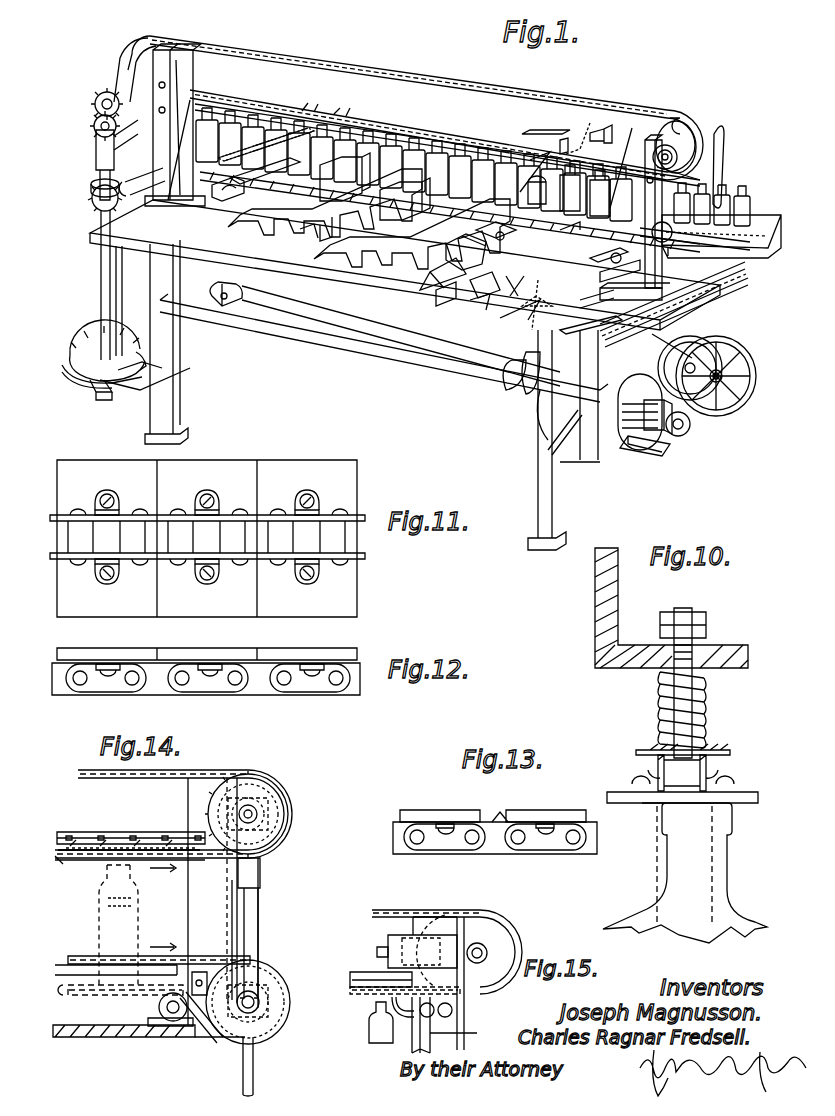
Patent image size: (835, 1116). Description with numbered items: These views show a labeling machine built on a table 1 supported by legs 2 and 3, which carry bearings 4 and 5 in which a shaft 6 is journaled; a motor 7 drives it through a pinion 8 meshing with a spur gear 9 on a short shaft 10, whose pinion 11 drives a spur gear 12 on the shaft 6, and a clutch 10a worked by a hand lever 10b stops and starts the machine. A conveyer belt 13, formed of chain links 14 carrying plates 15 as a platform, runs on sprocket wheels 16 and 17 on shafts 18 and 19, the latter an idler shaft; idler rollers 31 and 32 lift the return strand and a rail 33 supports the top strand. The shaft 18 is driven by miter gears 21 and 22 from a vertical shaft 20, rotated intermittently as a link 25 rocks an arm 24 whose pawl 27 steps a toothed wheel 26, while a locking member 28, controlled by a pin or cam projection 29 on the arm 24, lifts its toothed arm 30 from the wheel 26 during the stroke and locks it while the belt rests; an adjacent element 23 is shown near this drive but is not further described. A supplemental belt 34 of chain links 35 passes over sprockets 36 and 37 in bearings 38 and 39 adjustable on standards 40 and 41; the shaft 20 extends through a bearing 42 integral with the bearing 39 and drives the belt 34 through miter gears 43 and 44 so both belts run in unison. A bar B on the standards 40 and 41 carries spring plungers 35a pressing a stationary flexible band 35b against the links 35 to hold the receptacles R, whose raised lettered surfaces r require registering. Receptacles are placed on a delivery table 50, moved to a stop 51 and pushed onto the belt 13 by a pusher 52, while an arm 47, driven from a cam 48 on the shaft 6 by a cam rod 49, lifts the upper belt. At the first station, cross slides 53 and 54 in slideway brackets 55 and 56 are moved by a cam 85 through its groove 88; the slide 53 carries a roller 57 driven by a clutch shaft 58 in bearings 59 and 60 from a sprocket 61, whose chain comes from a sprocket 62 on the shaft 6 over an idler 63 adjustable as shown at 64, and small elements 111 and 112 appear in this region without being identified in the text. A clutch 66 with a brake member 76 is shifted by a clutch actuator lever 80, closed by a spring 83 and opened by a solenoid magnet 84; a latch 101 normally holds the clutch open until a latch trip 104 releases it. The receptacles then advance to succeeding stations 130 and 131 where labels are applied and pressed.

In FIG. 1, the table 1 is at (525, 392).
In FIG. 14, the table 1 is at (134, 1037).
In FIG. 1, the leg 2 is at (175, 404).
In FIG. 1, the leg 3 is at (540, 470).
In FIG. 1, the bearing 4 is at (240, 300).
In FIG. 1, the bearing 5 is at (598, 440).
In FIG. 1, the shaft 6 is at (636, 436).
In FIG. 1, the motor 7 is at (664, 452).
In FIG. 1, the pinion 8 is at (680, 436).
In FIG. 1, the spur gear 9 is at (692, 420).
In FIG. 1, the short shaft 10 is at (732, 346).
In FIG. 1, the clutch 10a is at (704, 356).
In FIG. 1, the hand lever 10b is at (724, 184).
In FIG. 1, the pinion 11 is at (706, 340).
In FIG. 1, the spur gear 12 is at (722, 378).
In FIG. 1, the conveyer belt 13 is at (700, 282).
In FIG. 13, the conveyer belt 13 is at (448, 812).
In FIG. 1, the chain links 14 is at (690, 300).
In FIG. 13, the chain links 14 is at (494, 848).
In FIG. 14, the chain links 14 is at (100, 996).
In FIG. 1, the plates 15 is at (700, 248).
In FIG. 13, the plates 15 is at (498, 812).
In FIG. 14, the plates 15 is at (262, 960).
In FIG. 1, the sprocket wheel 16 is at (720, 258).
In FIG. 1, the sprocket wheel 17 is at (216, 196).
In FIG. 14, the sprocket wheel 17 is at (278, 982).
In FIG. 1, the shaft 18 is at (100, 206).
In FIG. 14, the shaft 18 is at (258, 1010).
In FIG. 1, the idler shaft 19 is at (610, 304).
In FIG. 1, the vertical shaft 20 is at (100, 298).
In FIG. 14, the vertical shaft 20 is at (256, 1058).
In FIG. 1, the miter gear 21 is at (90, 190).
In FIG. 14, the miter gear 21 is at (278, 996).
In FIG. 1, the miter gear 22 is at (94, 202).
In FIG. 14, the miter gear 22 is at (282, 1004).
In FIG. 1, the bearing 23 is at (218, 298).
In FIG. 1, the rock arm 24 is at (140, 392).
In FIG. 1, the link 25 is at (250, 330).
In FIG. 1, the toothed wheel 26 is at (88, 346).
In FIG. 1, the pawl 27 is at (142, 358).
In FIG. 1, the locking member 28 is at (90, 384).
In FIG. 1, the pin or cam projection 29 is at (140, 368).
In FIG. 1, the toothed arm 30 is at (64, 368).
In FIG. 1, the idler roller 31 is at (250, 190).
In FIG. 1, the idler roller 32 is at (614, 262).
In FIG. 1, the rail 33 is at (262, 172).
In FIG. 14, the rail 33 is at (150, 965).
In FIG. 1, the supplemental belt 34 is at (510, 90).
In FIG. 11, the supplemental belt 34 is at (356, 580).
In FIG. 12, the supplemental belt 34 is at (340, 648).
In FIG. 10, the supplemental belt 34 is at (620, 790).
In FIG. 14, the supplemental belt 34 is at (274, 850).
In FIG. 15, the supplemental belt 34 is at (404, 910).
In FIG. 11, the chain links 35 is at (356, 540).
In FIG. 12, the chain links 35 is at (306, 696).
In FIG. 10, the chain links 35 is at (708, 774).
In FIG. 14, the chain links 35 is at (178, 778).
In FIG. 1, the spring plungers 35a is at (314, 110).
In FIG. 10, the spring plungers 35a is at (706, 732).
In FIG. 14, the spring plungers 35a is at (110, 842).
In FIG. 15, the spring plungers 35a is at (352, 972).
In FIG. 1, the flexible band 35b is at (346, 112).
In FIG. 10, the flexible band 35b is at (728, 752).
In FIG. 14, the flexible band 35b is at (152, 846).
In FIG. 15, the flexible band 35b is at (358, 996).
In FIG. 1, the sprocket 36 is at (200, 62).
In FIG. 14, the sprocket 36 is at (282, 800).
In FIG. 1, the sprocket 37 is at (690, 134).
In FIG. 15, the sprocket 37 is at (506, 950).
In FIG. 1, the bearing 38 is at (130, 82).
In FIG. 1, the bearing 39 is at (680, 153).
In FIG. 15, the bearing 39 is at (488, 948).
In FIG. 1, the standard 40 is at (180, 103).
In FIG. 14, the standard 40 is at (214, 918).
In FIG. 1, the standard 41 is at (664, 166).
In FIG. 15, the standard 41 is at (466, 928).
In FIG. 1, the bearing 42 is at (100, 142).
In FIG. 14, the bearing 42 is at (260, 872).
In FIG. 1, the miter gear 43 is at (96, 102).
In FIG. 14, the miter gear 43 is at (258, 812).
In FIG. 1, the miter gear 44 is at (94, 122).
In FIG. 14, the miter gear 44 is at (262, 822).
In FIG. 1, the arm 47 is at (648, 138).
In FIG. 15, the arm 47 is at (412, 1022).
In FIG. 1, the cam 48 is at (548, 452).
In FIG. 1, the cam rod 49 is at (608, 262).
In FIG. 15, the cam rod 49 is at (470, 1033).
In FIG. 1, the delivery table 50 is at (764, 196).
In FIG. 1, the stop 51 is at (616, 128).
In FIG. 1, the pusher 52 is at (666, 126).
In FIG. 1, the cross slide 53 is at (430, 292).
In FIG. 1, the cross slide 54 is at (586, 132).
In FIG. 1, the slideway bracket 55 is at (446, 306).
In FIG. 1, the slideway bracket 56 is at (600, 193).
In FIG. 1, the roller 57 is at (545, 160).
In FIG. 1, the clutch shaft 58 is at (548, 300).
In FIG. 1, the bearing 59 is at (490, 288).
In FIG. 1, the bearing 60 is at (490, 240).
In FIG. 1, the sprocket 61 is at (612, 278).
In FIG. 1, the sprocket 62 is at (600, 330).
In FIG. 1, the idler 63 is at (512, 366).
In FIG. 1, the chain adjustment 64 is at (528, 330).
In FIG. 1, the clutch 66 is at (470, 266).
In FIG. 1, the brake member 76 is at (480, 316).
In FIG. 1, the clutch actuator lever 80 is at (516, 296).
In FIG. 1, the spring 83 is at (520, 248).
In FIG. 1, the solenoid magnet 84 is at (530, 270).
In FIG. 1, the cam 85 is at (530, 386).
In FIG. 1, the groove 88 is at (545, 412).
In FIG. 1, the latch 101 is at (382, 212).
In FIG. 1, the latch trip 104 is at (350, 190).
In FIG. 1, the plate 111 is at (568, 140).
In FIG. 1, the rod 112 is at (590, 150).
In FIG. 1, the station 130 is at (380, 252).
In FIG. 1, the station 131 is at (300, 240).
In FIG. 1, the bar B is at (420, 128).
In FIG. 10, the bar B is at (722, 645).
In FIG. 14, the bar B is at (88, 832).
In FIG. 15, the bar B is at (368, 972).
In FIG. 1, the receptacles R is at (488, 150).
In FIG. 10, the receptacles R is at (685, 873).
In FIG. 14, the receptacles R is at (102, 926).
In FIG. 15, the receptacles R is at (381, 1022).
In FIG. 14, the raised lettered surfaces r is at (132, 902).